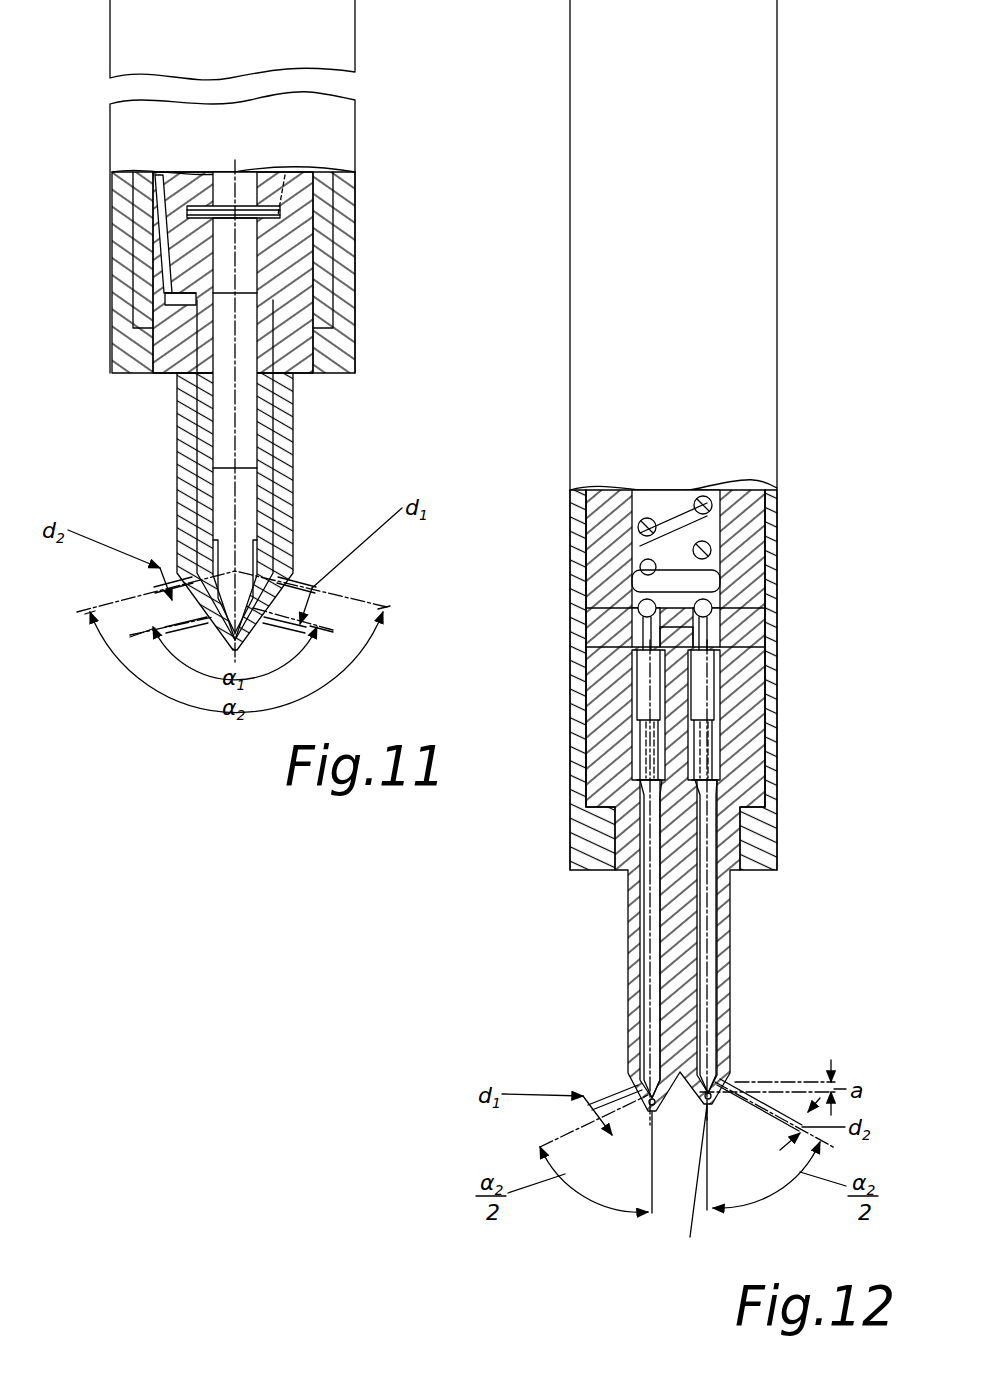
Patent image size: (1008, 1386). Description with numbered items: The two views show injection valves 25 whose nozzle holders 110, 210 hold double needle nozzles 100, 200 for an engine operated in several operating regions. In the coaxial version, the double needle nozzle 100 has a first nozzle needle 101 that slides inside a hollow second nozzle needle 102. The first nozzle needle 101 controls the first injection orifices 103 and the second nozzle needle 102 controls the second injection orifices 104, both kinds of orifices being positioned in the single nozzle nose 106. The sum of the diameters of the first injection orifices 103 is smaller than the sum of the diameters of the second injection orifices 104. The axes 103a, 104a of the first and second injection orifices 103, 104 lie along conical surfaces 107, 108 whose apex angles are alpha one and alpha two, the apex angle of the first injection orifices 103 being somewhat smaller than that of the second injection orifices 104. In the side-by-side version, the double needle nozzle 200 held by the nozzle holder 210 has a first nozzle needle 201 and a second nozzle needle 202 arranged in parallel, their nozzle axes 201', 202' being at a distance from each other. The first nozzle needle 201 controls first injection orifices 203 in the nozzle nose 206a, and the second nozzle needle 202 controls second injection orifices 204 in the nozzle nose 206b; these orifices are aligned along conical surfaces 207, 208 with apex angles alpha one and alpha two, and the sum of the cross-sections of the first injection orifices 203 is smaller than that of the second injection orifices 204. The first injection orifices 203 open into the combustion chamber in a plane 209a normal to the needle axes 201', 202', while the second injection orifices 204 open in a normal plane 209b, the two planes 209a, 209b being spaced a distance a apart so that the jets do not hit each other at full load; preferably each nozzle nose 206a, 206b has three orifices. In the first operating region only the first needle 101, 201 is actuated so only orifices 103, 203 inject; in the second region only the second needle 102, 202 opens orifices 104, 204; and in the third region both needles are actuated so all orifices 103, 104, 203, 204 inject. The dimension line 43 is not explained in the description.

In FIG. 11, the injection valve 25 is at (110, 160).
In FIG. 12, the injection valve 25 is at (780, 449).
In FIG. 11, the nozzle holder 110 is at (110, 275).
In FIG. 11, the double needle nozzle 100 is at (172, 410).
In FIG. 11, the second nozzle needle 102 is at (200, 446).
In FIG. 11, the first nozzle needle 101 is at (222, 496).
In FIG. 11, the second injection orifices 104 is at (288, 572).
In FIG. 11, the first injection orifices 103 is at (300, 592).
In FIG. 11, the conical surface 107 is at (335, 603).
In FIG. 11, the axes of first injection orifices 103a is at (340, 625).
In FIG. 11, the axes of second injection orifices 104a is at (365, 612).
In FIG. 11, the conical surface 108 is at (128, 588).
In FIG. 11, the nozzle nose 106 is at (190, 628).
In FIG. 12, the nozzle holder 210 is at (780, 709).
In FIG. 12, the double needle nozzle 200 is at (745, 769).
In FIG. 12, the first nozzle needle 201 is at (557, 874).
In FIG. 12, the nozzle axis 201' is at (546, 882).
In FIG. 12, the second nozzle needle 202 is at (790, 871).
In FIG. 12, the nozzle axis 202' is at (801, 880).
In FIG. 12, the second injection orifices 204 is at (722, 1078).
In FIG. 12, the conical surface 208 is at (767, 1077).
In FIG. 12, the normal plane 209b is at (780, 1082).
In FIG. 12, the normal plane 209a is at (800, 1089).
In FIG. 12, the nozzle nose 206a is at (632, 1076).
In FIG. 12, the nozzle nose 206b is at (686, 1178).
In FIG. 12, the first injection orifices 203 is at (636, 1083).
In FIG. 12, the conical surface 207 is at (565, 1127).
In FIG. 12, the spray angle arc 43 is at (556, 1175).